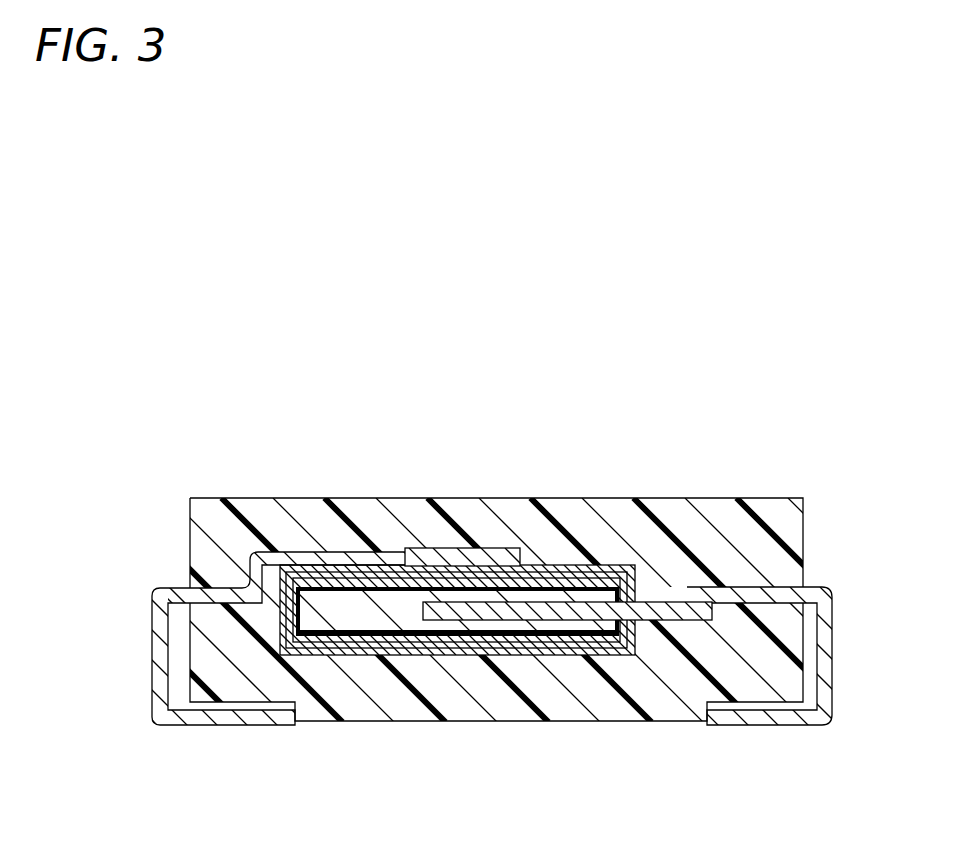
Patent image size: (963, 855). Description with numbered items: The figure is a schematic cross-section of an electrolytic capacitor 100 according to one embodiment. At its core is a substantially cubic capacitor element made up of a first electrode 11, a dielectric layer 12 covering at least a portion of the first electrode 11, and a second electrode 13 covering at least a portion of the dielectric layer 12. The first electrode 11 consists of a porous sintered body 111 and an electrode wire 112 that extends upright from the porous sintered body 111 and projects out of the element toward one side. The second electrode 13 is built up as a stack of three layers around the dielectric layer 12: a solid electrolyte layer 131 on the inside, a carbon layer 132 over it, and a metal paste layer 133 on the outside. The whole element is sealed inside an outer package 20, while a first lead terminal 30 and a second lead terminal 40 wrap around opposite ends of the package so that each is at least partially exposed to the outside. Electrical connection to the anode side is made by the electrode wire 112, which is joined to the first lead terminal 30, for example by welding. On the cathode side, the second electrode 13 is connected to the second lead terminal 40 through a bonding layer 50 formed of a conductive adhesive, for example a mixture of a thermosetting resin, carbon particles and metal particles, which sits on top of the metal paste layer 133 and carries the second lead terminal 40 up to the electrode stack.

The electrolytic capacitor 100 is at (533, 320).
The first electrode 11 is at (510, 725).
The porous sintered body 111 is at (505, 627).
The electrode wire 112 is at (567, 618).
The dielectric layer 12 is at (318, 602).
The second electrode 13 is at (455, 693).
The solid electrolyte layer 131 is at (300, 772).
The carbon layer 132 is at (380, 645).
The metal paste layer 133 is at (343, 650).
The outer package 20 is at (218, 528).
The first lead terminal 30 is at (822, 597).
The second lead terminal 40 is at (160, 632).
The bonding layer 50 is at (474, 565).